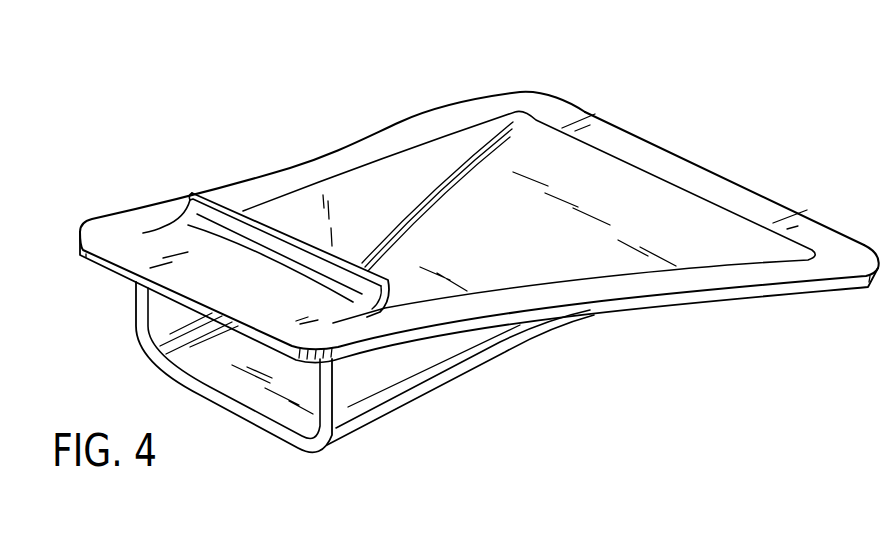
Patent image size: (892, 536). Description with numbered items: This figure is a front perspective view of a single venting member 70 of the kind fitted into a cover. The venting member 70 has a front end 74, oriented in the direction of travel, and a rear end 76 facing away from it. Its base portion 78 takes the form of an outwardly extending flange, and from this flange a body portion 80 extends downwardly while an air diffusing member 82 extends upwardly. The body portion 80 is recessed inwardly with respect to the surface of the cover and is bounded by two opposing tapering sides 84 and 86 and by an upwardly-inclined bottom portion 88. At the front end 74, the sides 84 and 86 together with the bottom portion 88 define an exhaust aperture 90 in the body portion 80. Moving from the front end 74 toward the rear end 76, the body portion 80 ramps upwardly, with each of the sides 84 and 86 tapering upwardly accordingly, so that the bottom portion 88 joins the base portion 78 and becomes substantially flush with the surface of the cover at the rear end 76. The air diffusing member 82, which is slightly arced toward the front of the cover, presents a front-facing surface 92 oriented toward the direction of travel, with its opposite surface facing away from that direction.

The venting member 70 is at (590, 110).
The front end 74 is at (118, 272).
The rear end 76 is at (681, 152).
The base portion 78 is at (420, 123).
The body portion 80 is at (410, 390).
The air diffusing member 82 is at (222, 196).
The tapering side 84 is at (430, 348).
The tapering side 86 is at (348, 193).
The bottom portion 88 is at (531, 207).
The exhaust aperture 90 is at (236, 390).
The front-facing surface 92 is at (188, 196).